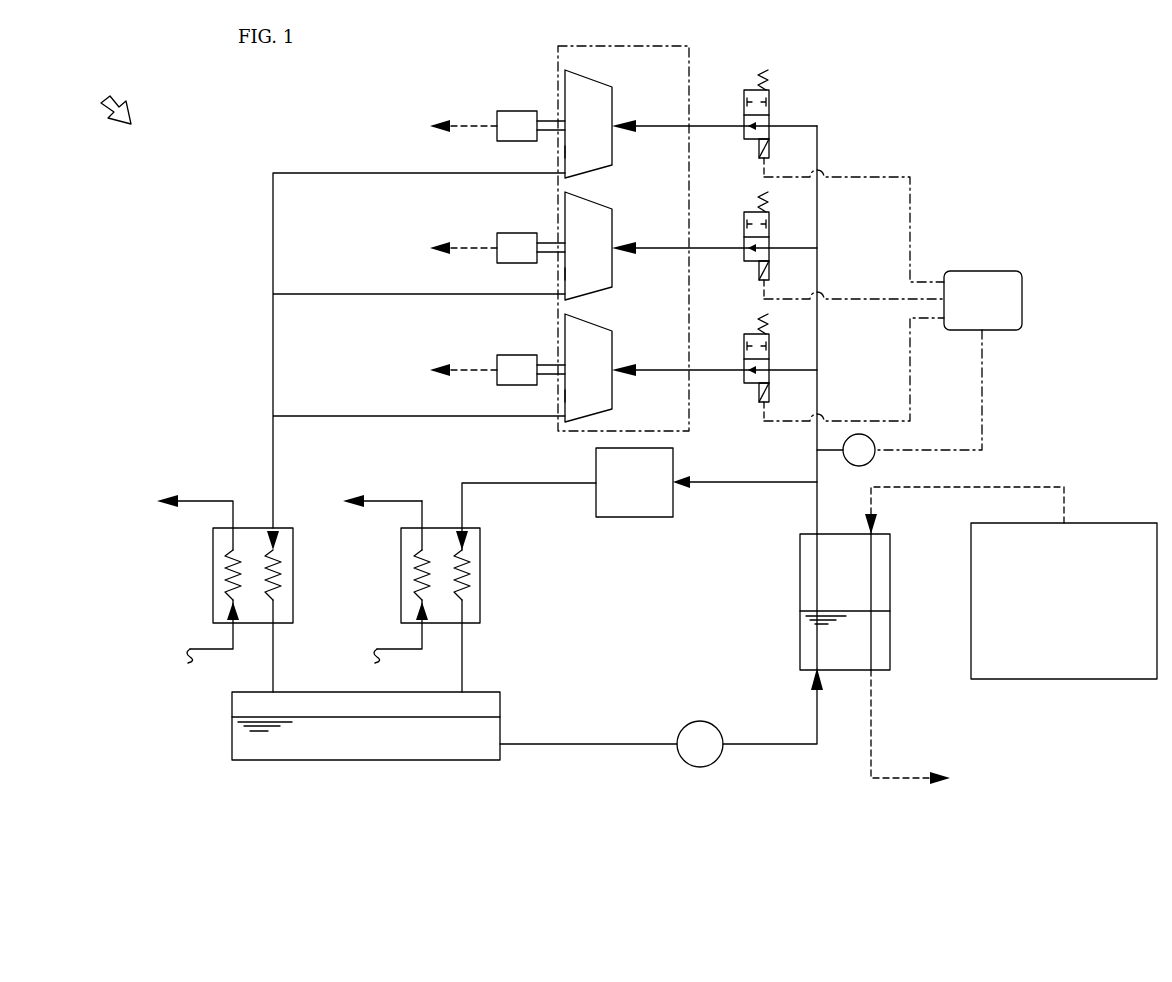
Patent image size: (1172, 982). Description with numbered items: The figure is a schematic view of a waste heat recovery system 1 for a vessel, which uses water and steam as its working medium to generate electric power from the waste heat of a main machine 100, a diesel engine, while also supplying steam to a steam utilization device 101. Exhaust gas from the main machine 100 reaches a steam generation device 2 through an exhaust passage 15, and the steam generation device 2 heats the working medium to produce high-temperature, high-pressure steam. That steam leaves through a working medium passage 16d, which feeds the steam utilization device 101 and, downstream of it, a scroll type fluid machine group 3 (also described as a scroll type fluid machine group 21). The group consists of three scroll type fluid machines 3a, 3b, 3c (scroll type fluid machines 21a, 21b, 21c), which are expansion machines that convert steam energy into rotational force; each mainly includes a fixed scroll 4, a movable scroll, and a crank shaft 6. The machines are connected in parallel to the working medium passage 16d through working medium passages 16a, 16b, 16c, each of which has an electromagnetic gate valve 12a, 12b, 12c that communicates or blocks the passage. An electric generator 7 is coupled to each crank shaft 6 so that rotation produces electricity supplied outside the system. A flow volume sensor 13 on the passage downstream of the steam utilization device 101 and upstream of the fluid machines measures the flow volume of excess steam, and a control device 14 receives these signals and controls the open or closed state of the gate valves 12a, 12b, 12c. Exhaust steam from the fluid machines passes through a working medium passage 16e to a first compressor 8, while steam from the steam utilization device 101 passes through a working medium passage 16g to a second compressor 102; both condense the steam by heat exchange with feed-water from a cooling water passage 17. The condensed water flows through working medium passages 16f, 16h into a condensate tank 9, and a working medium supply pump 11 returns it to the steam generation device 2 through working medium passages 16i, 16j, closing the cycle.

The waste heat recovery system for the vessel 1 is at (110, 100).
The steam generation device 2 is at (800, 584).
The scroll type fluid machine group 3 is at (675, 251).
The scroll type fluid machine group 21 is at (623, 238).
The scroll type fluid machine 3a is at (623, 360).
The scroll type fluid machine 3b is at (623, 238).
The scroll type fluid machine 3c is at (622, 116).
The scroll type fluid machine 21a is at (630, 321).
The scroll type fluid machine 21b is at (630, 199).
The scroll type fluid machine 21c is at (630, 77).
The fixed scroll 4 is at (542, 278).
The crank shaft 6 is at (548, 118).
The electric generator 7 is at (515, 111).
The first compressor 8 is at (295, 578).
The condensate tank 9 is at (502, 706).
The working medium supply pump 11 is at (702, 722).
The gate valve 12a is at (752, 336).
The gate valve 12b is at (752, 214).
The gate valve 12c is at (752, 92).
The flow volume sensor 13 is at (873, 462).
The control device 14 is at (992, 307).
The exhaust passage 15 is at (1038, 484).
The working medium passage 16a is at (801, 368).
The working medium passage 16b is at (801, 246).
The working medium passage 16c is at (801, 124).
The working medium passage 16d is at (815, 505).
The working medium passage 16e is at (272, 438).
The working medium passage 16f is at (278, 657).
The working medium passage 16g is at (464, 511).
The working medium passage 16h is at (466, 657).
The working medium passage 16i is at (590, 740).
The working medium passage 16j is at (768, 740).
The cooling water passage 17 is at (196, 497).
The main machine 100 is at (1070, 618).
The steam utilization device 101 is at (652, 497).
The second compressor 102 is at (483, 578).